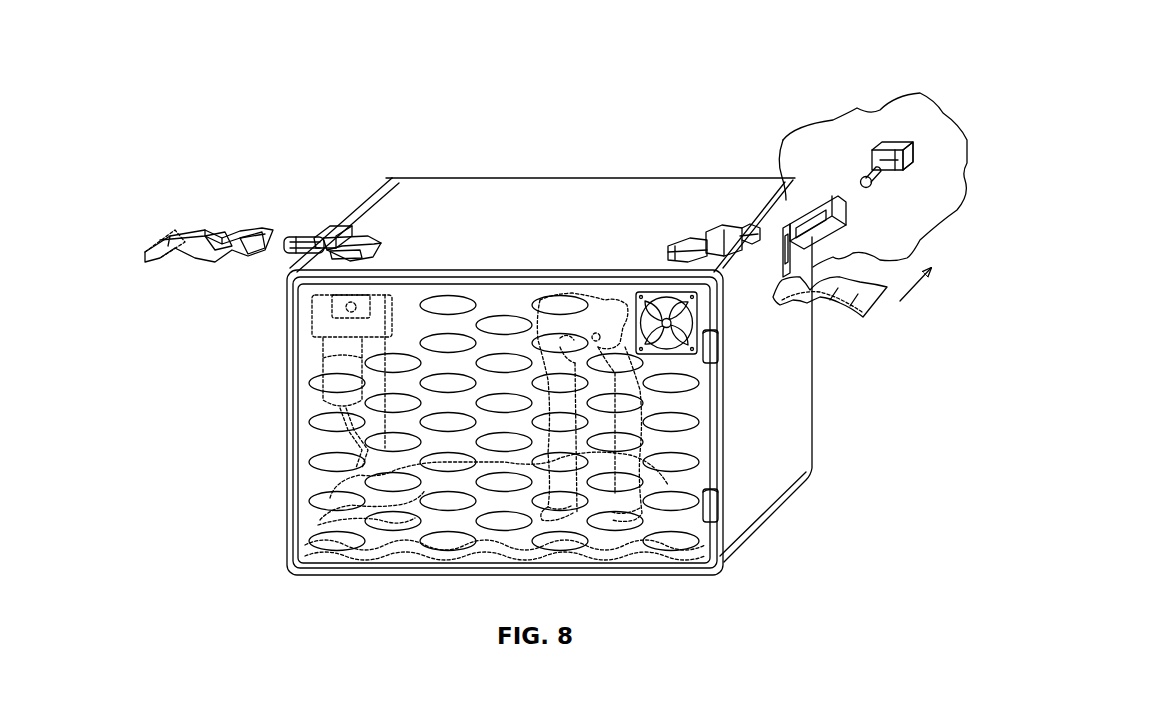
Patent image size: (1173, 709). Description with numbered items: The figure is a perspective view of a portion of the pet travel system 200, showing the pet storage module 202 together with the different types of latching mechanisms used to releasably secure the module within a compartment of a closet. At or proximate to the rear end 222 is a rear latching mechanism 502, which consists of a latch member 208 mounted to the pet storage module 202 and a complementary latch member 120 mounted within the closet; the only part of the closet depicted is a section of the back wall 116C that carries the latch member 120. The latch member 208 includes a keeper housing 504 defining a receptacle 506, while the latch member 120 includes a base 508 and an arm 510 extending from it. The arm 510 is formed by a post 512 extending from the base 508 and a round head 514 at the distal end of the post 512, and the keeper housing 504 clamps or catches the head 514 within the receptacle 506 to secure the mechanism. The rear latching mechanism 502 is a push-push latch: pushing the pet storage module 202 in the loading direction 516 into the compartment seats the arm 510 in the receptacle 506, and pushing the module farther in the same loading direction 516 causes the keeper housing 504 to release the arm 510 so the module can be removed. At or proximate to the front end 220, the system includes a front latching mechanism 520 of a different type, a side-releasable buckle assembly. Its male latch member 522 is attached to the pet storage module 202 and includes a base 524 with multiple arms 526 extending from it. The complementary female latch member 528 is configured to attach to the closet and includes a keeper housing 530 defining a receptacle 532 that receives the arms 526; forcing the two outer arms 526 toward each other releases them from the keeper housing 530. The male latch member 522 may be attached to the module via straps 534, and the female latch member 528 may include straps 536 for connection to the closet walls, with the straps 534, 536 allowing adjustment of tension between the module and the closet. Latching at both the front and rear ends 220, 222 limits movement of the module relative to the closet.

The pet travel system 200 is at (370, 57).
The pet storage module 202 is at (354, 200).
The latch member 208 is at (800, 212).
The front end 220 is at (282, 332).
The rear end 222 is at (593, 176).
The rear latching mechanism 502 is at (836, 146).
The keeper housing 504 is at (823, 210).
The receptacle 506 is at (846, 213).
The base 508 is at (912, 162).
The arm 510 is at (868, 170).
The post 512 is at (880, 172).
The round head 514 is at (870, 184).
The loading direction 516 is at (917, 287).
The front latching mechanism 520 is at (263, 160).
The male latch member 522 is at (325, 220).
The base 524 is at (321, 238).
The arms 526 is at (297, 234).
The female latch member 528 is at (233, 222).
The keeper housing 530 is at (245, 238).
The receptacle 532 is at (267, 256).
The straps 534 is at (353, 247).
The straps 536 is at (183, 238).
The back wall 116C is at (913, 107).
The latch member 120 is at (906, 136).